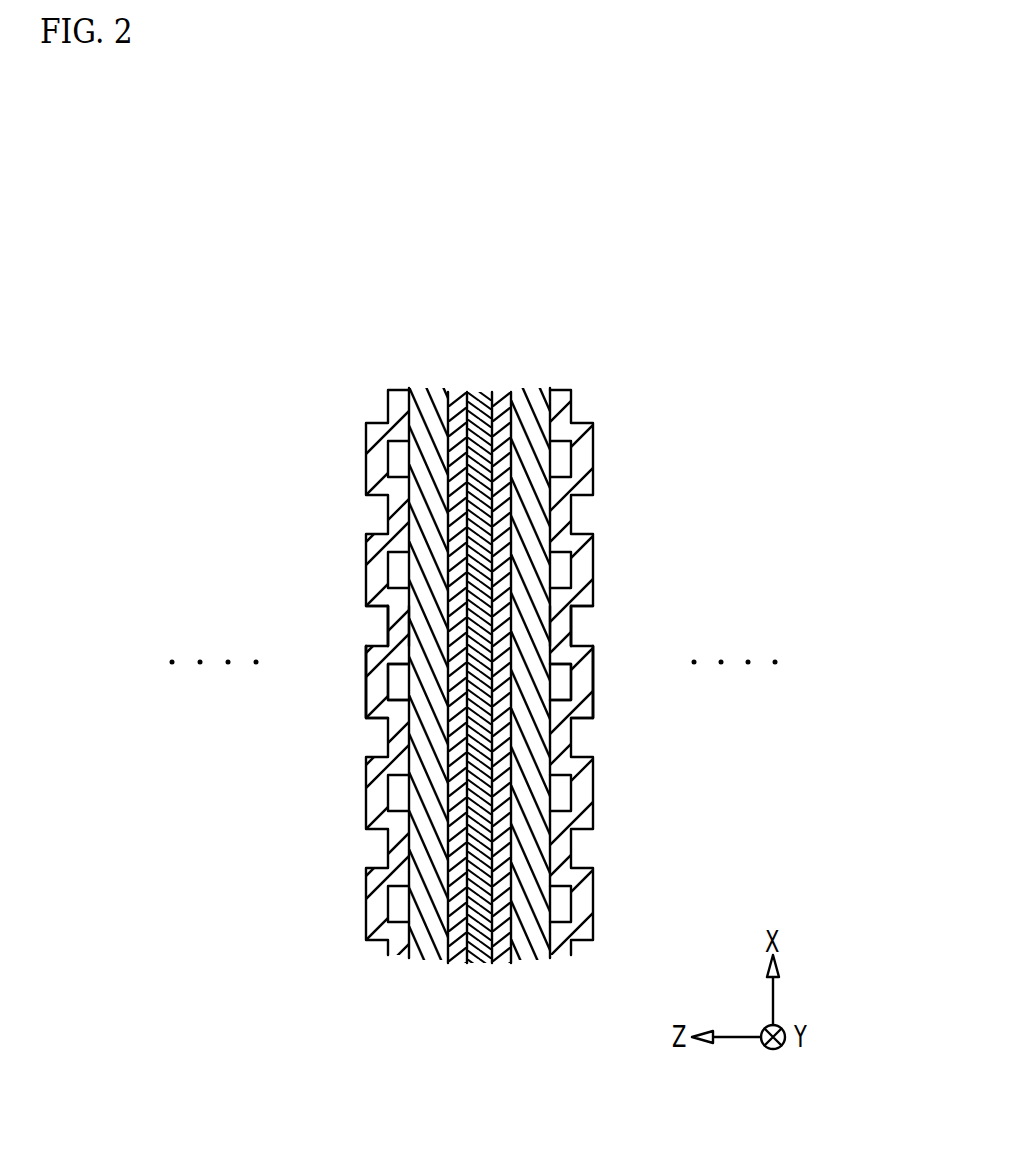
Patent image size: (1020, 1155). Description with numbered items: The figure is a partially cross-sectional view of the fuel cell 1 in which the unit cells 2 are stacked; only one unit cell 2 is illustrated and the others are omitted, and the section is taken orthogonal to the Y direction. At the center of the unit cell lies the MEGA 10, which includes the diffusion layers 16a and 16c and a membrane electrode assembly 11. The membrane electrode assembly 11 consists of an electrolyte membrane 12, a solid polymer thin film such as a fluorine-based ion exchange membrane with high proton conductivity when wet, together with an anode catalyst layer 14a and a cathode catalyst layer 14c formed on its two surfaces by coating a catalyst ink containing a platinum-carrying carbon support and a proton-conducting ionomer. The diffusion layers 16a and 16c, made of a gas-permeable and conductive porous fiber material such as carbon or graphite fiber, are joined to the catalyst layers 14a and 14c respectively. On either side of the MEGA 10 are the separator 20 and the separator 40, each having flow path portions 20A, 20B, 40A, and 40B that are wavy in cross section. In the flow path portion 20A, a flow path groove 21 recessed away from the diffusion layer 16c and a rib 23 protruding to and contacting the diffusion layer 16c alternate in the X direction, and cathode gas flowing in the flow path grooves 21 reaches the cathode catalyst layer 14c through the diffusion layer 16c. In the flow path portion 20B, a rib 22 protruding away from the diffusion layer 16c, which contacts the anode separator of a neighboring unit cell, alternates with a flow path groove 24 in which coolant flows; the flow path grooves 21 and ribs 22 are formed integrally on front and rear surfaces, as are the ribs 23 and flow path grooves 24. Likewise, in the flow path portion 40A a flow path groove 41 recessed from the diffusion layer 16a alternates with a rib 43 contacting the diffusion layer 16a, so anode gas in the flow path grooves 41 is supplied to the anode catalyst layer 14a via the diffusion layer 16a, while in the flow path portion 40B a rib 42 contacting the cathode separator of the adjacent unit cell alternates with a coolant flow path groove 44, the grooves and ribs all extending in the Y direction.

The fuel cell 1 is at (707, 144).
The unit cell 2 is at (677, 261).
The MEGA 10 is at (480, 558).
The membrane electrode assembly 11 is at (486, 581).
The electrolyte membrane 12 is at (483, 646).
The anode catalyst layer 14a is at (510, 606).
The cathode catalyst layer 14c is at (464, 606).
The diffusion layer 16a is at (531, 641).
The diffusion layer 16c is at (430, 641).
The separator 20 is at (510, 650).
The flow path portion 20A is at (330, 702).
The flow path portion 20B is at (329, 626).
The flow path groove 21 is at (351, 674).
The rib 22 is at (321, 684).
The rib 23 is at (348, 594).
The flow path groove 24 is at (315, 603).
The separator 40 is at (510, 650).
The flow path portion 40A is at (631, 699).
The flow path portion 40B is at (633, 626).
The flow path groove 41 is at (611, 671).
The rib 42 is at (651, 682).
The rib 43 is at (599, 589).
The flow path groove 44 is at (640, 600).